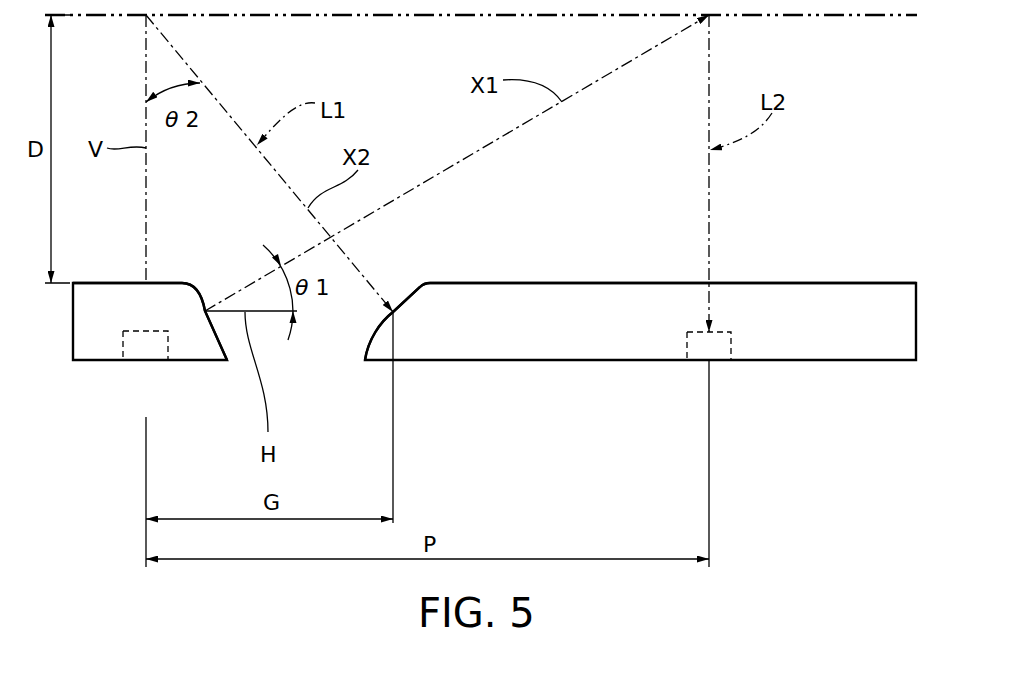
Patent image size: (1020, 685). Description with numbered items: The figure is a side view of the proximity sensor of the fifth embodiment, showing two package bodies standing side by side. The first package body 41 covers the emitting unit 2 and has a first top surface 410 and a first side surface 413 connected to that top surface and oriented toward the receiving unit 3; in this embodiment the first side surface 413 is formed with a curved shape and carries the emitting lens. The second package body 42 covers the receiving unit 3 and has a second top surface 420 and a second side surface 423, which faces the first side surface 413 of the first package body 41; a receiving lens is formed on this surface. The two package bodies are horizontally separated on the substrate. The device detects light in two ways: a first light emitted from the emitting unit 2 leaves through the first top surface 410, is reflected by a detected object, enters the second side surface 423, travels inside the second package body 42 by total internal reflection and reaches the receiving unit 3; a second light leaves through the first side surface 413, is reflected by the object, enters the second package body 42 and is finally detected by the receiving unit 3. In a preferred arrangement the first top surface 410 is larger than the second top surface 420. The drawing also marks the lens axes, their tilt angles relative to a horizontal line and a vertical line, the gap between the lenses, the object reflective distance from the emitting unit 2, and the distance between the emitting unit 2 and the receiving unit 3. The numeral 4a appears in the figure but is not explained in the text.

The first package body 41 is at (160, 282).
The first top surface 410 is at (115, 283).
The first side surface 413 is at (203, 307).
The emitting unit 2 is at (142, 354).
The second package body 42 is at (880, 280).
The second top surface 420 is at (810, 283).
The second side surface 423 is at (410, 297).
The receiving unit 3 is at (716, 354).
The light guide assembly 4a is at (848, 158).